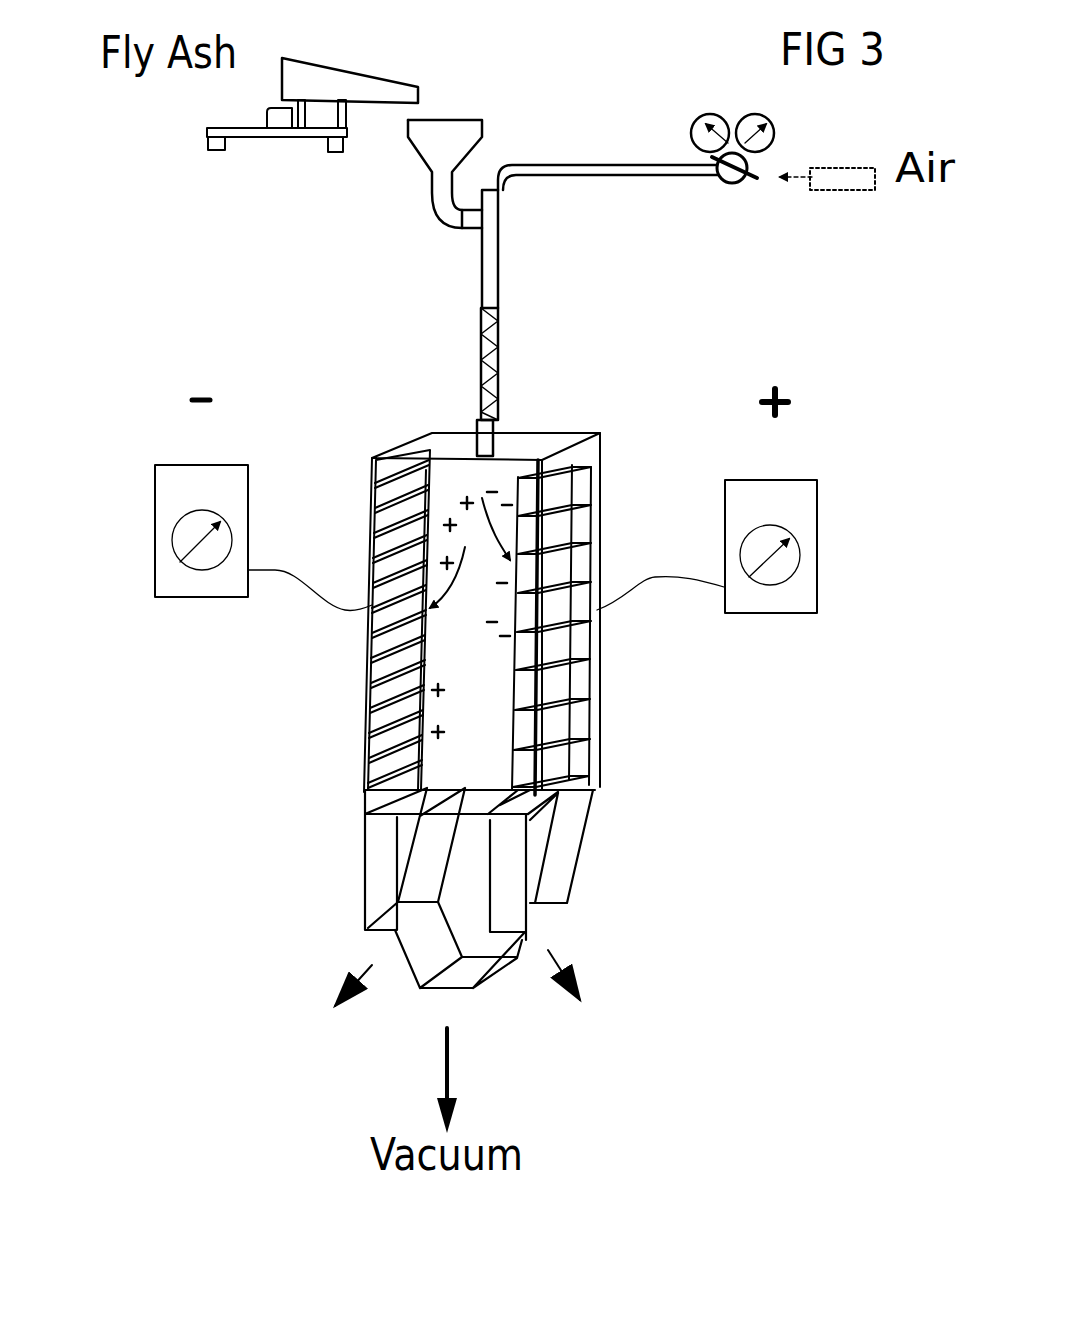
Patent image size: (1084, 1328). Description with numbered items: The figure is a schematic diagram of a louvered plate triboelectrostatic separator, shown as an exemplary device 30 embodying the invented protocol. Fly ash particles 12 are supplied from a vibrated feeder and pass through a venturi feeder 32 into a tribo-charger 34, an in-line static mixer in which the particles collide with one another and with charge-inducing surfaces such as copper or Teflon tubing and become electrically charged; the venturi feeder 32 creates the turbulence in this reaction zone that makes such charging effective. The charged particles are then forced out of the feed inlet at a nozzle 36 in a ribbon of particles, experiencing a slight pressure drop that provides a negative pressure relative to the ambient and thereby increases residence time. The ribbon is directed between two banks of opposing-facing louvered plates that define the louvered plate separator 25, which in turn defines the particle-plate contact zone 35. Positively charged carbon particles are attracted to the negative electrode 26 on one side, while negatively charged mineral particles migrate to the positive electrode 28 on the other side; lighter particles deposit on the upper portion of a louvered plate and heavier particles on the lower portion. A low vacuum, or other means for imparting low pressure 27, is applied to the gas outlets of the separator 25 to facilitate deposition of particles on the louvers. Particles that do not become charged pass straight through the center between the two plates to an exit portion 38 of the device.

The fly ash particles 12 is at (337, 82).
The venturi feeder 32 is at (492, 218).
The tribo-charger 34 is at (481, 357).
The nozzle 36 is at (482, 458).
The device 30 is at (243, 298).
The louvered plate separator 25 is at (359, 791).
The negative electrode 26 is at (385, 672).
The positive electrode 28 is at (557, 705).
The particle-plate contact zone 35 is at (485, 678).
The exit portion 38 is at (435, 997).
The means for imparting low pressure 27 is at (440, 1083).